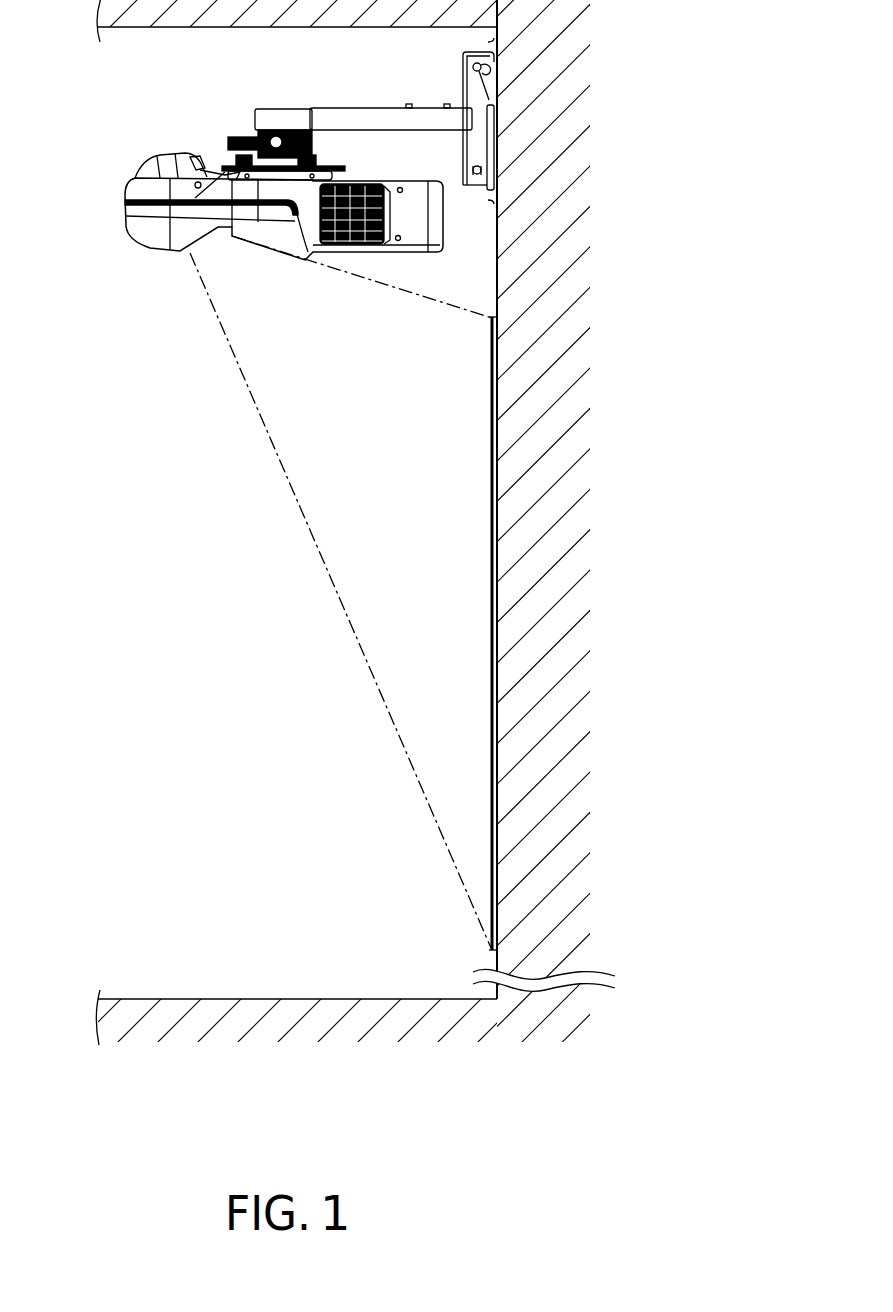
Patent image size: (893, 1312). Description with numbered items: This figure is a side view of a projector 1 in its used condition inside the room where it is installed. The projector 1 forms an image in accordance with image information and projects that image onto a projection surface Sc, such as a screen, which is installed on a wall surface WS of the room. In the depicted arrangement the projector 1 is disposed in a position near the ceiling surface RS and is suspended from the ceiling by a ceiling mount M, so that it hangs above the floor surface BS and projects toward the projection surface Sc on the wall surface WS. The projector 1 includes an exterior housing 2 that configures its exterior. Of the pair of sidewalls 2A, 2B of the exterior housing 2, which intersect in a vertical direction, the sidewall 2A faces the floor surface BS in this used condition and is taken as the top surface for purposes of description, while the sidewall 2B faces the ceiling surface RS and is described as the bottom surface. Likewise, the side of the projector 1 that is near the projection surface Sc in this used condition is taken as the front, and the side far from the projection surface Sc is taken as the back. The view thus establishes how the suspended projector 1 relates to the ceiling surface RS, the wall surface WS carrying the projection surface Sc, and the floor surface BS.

The projector 1 is at (118, 240).
The exterior housing 2 is at (410, 256).
The sidewall 2A is at (368, 256).
The sidewall 2B is at (212, 177).
The ceiling mount M is at (367, 115).
The ceiling surface RS is at (262, 27).
The wall surface WS is at (494, 246).
The floor surface BS is at (222, 999).
The projection surface Sc is at (490, 405).